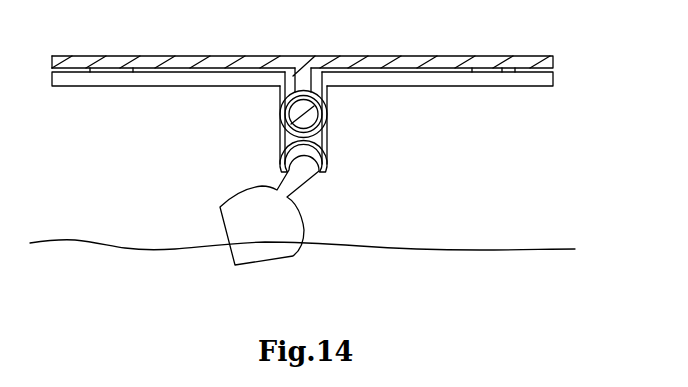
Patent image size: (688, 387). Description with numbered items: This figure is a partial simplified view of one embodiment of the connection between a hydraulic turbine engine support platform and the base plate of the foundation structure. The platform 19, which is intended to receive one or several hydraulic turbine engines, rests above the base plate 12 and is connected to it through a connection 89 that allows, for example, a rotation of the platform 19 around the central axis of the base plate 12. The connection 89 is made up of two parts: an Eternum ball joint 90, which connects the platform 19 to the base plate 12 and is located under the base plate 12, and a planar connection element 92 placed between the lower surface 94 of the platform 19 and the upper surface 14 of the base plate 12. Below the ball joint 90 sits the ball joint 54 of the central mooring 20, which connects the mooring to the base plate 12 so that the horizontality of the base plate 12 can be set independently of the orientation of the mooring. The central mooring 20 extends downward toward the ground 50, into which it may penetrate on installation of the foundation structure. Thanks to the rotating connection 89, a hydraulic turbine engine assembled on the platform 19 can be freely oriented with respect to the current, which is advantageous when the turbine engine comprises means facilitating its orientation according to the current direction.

The base plate 12 is at (525, 80).
The upper surface 14 is at (432, 73).
The platform 19 is at (488, 62).
The central mooring 20 is at (296, 230).
The ground 50 is at (463, 267).
The ball joint 54 is at (300, 160).
The connection 89 is at (284, 112).
The ball joint 90 is at (308, 112).
The planar connection element 92 is at (101, 70).
The lower surface 94 is at (373, 68).